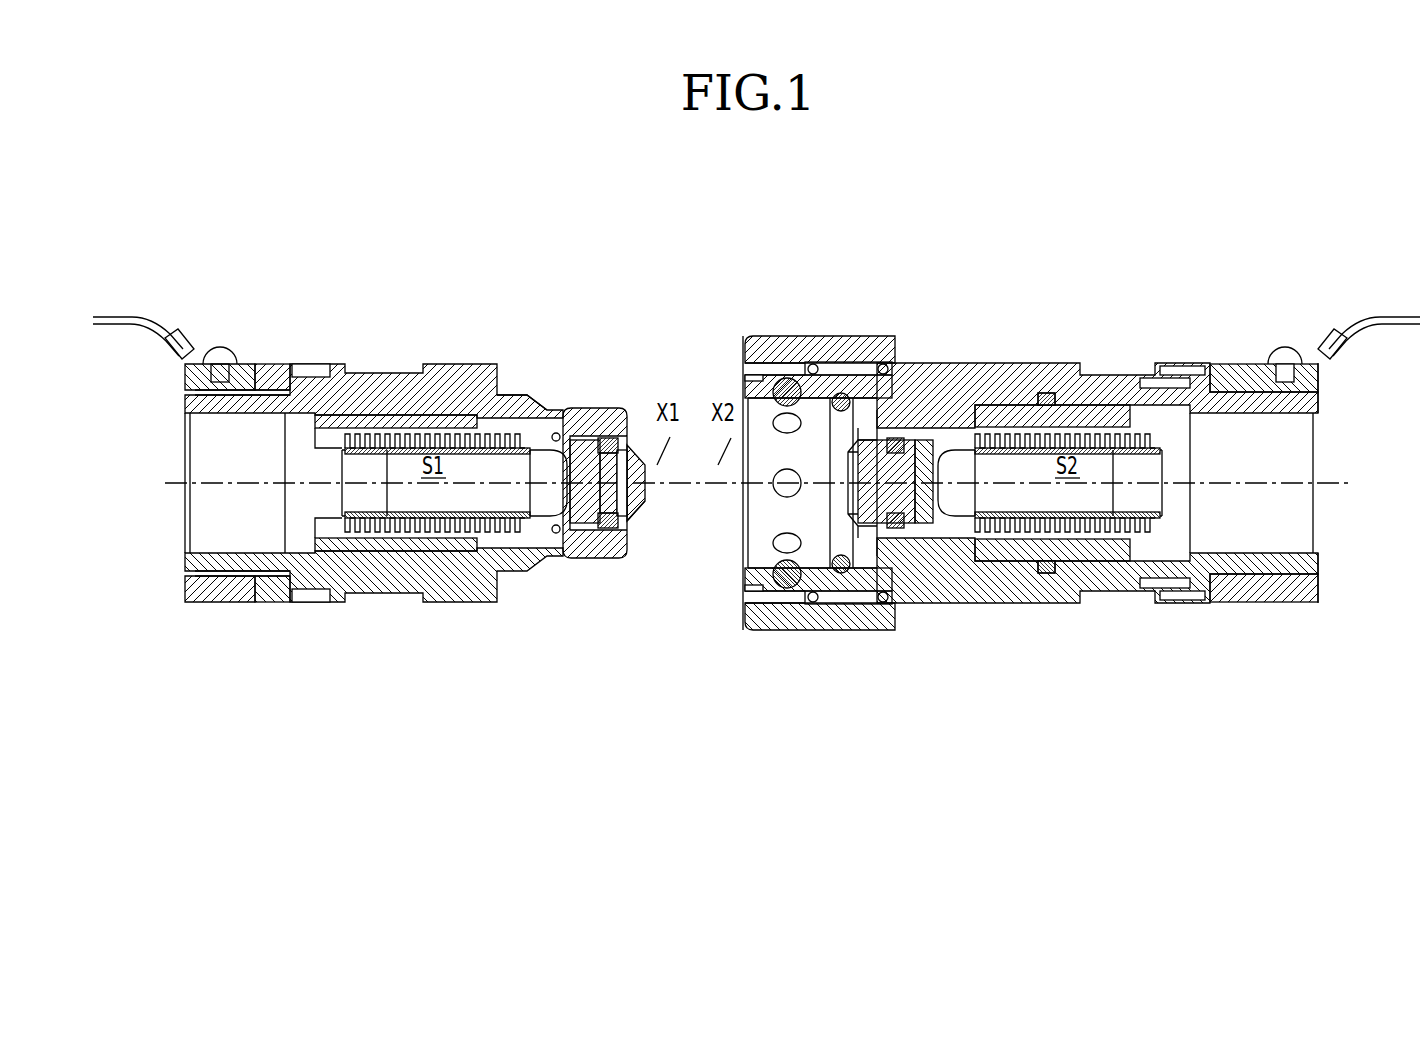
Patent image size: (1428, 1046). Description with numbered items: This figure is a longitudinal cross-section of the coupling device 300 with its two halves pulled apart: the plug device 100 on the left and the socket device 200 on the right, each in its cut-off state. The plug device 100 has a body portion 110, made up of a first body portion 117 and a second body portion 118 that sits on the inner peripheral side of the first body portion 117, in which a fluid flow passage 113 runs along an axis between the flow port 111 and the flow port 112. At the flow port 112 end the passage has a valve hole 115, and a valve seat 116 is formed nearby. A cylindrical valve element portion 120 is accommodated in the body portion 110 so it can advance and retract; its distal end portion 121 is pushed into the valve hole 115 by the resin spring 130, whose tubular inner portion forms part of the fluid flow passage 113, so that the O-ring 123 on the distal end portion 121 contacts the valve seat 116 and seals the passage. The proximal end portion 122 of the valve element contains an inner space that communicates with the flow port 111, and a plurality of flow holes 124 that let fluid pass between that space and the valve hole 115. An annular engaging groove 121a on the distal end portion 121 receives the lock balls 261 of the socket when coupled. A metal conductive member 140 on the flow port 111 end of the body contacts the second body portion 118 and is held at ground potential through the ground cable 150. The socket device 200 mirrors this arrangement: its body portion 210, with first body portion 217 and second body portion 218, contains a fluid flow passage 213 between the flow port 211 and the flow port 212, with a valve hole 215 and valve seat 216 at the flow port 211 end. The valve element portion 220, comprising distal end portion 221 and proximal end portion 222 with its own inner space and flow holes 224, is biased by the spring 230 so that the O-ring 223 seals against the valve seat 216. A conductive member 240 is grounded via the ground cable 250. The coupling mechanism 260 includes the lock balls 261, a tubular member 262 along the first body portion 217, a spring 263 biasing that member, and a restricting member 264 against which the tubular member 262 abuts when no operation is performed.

The coupling device 300 is at (666, 280).
The plug device 100 is at (170, 305).
The body portion 110 is at (333, 538).
The flow port 111 is at (185, 515).
The flow port 112 is at (630, 521).
The fluid flow passage 113 is at (428, 512).
The valve hole 115 is at (630, 440).
The valve seat 116 is at (605, 438).
The first body portion 117 is at (357, 595).
The second body portion 118 is at (308, 575).
The valve element portion 120 is at (454, 491).
The distal end portion 121 is at (662, 490).
The engaging groove 121a is at (537, 408).
The proximal end portion 122 is at (410, 432).
The O-ring 123 is at (605, 525).
The flow holes 124 is at (556, 433).
The spring 130 is at (505, 545).
The conductive member 140 is at (224, 603).
The ground cable 150 is at (122, 325).
The socket device 200 is at (740, 305).
The body portion 210 is at (1137, 537).
The flow port 211 is at (745, 568).
The flow port 212 is at (1318, 520).
The fluid flow passage 213 is at (1092, 512).
The valve hole 215 is at (873, 455).
The valve seat 216 is at (898, 440).
The first body portion 217 is at (1150, 603).
The second body portion 218 is at (1205, 602).
The valve element portion 220 is at (1010, 426).
The distal end portion 221 is at (860, 500).
The proximal end portion 222 is at (1050, 423).
The O-ring 223 is at (903, 522).
The flow holes 224 is at (940, 437).
The spring 230 is at (1000, 540).
The conductive member 240 is at (1275, 602).
The ground cable 250 is at (1374, 322).
The coupling mechanism 260 is at (779, 532).
The lock balls 261 is at (787, 590).
The tubular member 262 is at (757, 632).
The spring 263 is at (815, 600).
The restricting member 264 is at (745, 590).